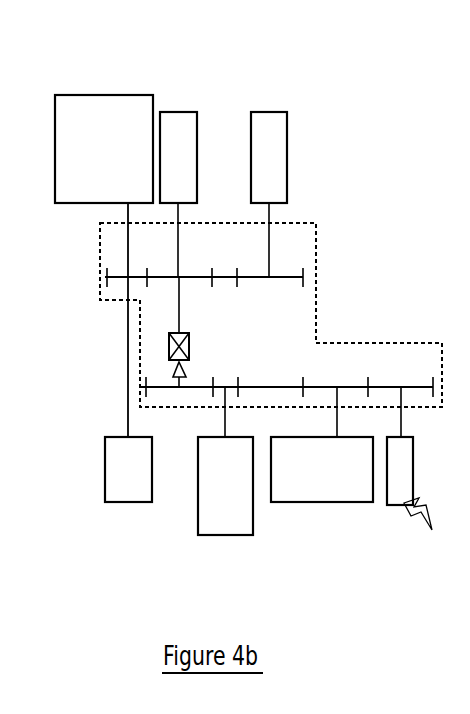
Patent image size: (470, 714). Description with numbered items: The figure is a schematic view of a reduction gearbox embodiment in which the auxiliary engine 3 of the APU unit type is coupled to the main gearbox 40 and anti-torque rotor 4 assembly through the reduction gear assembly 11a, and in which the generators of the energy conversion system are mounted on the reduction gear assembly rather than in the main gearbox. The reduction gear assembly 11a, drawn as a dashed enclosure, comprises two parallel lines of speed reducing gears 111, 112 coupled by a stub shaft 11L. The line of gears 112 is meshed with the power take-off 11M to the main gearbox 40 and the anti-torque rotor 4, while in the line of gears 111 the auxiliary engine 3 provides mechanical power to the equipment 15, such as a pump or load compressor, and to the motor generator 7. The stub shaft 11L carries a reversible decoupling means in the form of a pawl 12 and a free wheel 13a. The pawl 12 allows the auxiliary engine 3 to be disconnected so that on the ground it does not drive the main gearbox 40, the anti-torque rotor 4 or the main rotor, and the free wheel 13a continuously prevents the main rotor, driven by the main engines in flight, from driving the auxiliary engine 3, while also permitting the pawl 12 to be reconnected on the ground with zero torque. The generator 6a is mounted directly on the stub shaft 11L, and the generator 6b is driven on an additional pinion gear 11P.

The main gearbox 40 is at (108, 95).
The generator 6a is at (172, 112).
The generator 6b is at (268, 112).
The reduction gear assembly 11a is at (314, 223).
The line of gears 112 is at (105, 277).
The additional pinion gear 11P is at (252, 278).
The power take-off 11M is at (127, 327).
The stub shaft 11L is at (180, 308).
The pawl 12 is at (190, 338).
The free wheel 13a is at (186, 370).
The line of gears 111 is at (140, 387).
The anti-torque rotor 4 is at (130, 502).
The auxiliary engine 3 is at (242, 535).
The equipment 15 is at (332, 502).
The motor generator 7 is at (397, 505).